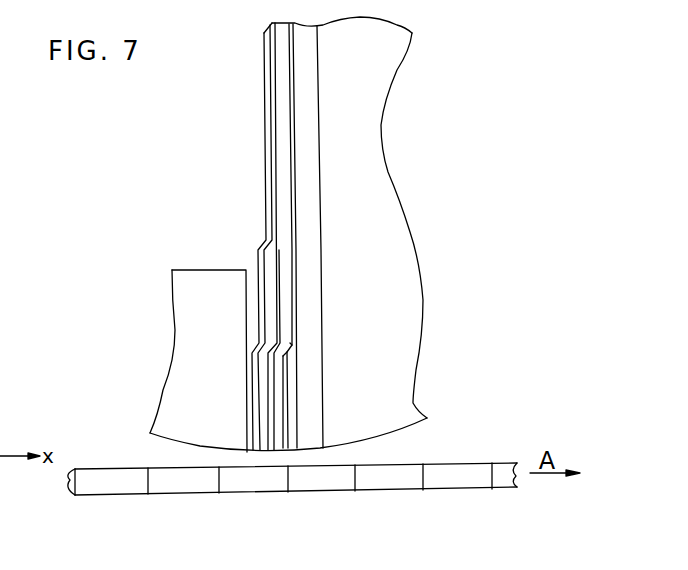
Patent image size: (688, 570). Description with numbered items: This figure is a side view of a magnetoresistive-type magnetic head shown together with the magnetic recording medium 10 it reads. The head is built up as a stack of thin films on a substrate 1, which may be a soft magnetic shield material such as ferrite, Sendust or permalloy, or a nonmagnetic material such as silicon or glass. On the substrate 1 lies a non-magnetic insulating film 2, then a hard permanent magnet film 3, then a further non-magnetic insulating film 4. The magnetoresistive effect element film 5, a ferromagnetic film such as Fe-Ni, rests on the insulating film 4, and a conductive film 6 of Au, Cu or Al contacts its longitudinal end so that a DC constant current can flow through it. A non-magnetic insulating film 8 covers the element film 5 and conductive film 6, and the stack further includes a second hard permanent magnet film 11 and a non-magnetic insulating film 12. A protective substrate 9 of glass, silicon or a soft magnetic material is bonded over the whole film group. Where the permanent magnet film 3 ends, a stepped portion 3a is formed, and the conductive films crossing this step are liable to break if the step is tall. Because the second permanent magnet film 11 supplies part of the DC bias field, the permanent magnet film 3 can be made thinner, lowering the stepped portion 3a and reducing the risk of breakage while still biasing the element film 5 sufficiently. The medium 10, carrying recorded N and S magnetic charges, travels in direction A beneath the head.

The substrate 1 is at (378, 97).
The non-magnetic insulating film 2 is at (312, 168).
The permanent magnet film 3 is at (296, 370).
The stepped portion 3a is at (290, 348).
The non-magnetic insulating film 4 is at (297, 227).
The magnetoresistive effect element film 5 is at (282, 402).
The conductive film 6 is at (283, 133).
The non-magnetic insulating film 8 is at (273, 163).
The protective substrate 9 is at (173, 296).
The magnetic recording medium 10 is at (260, 488).
The permanent magnet film 11 is at (268, 257).
The non-magnetic insulating film 12 is at (268, 200).